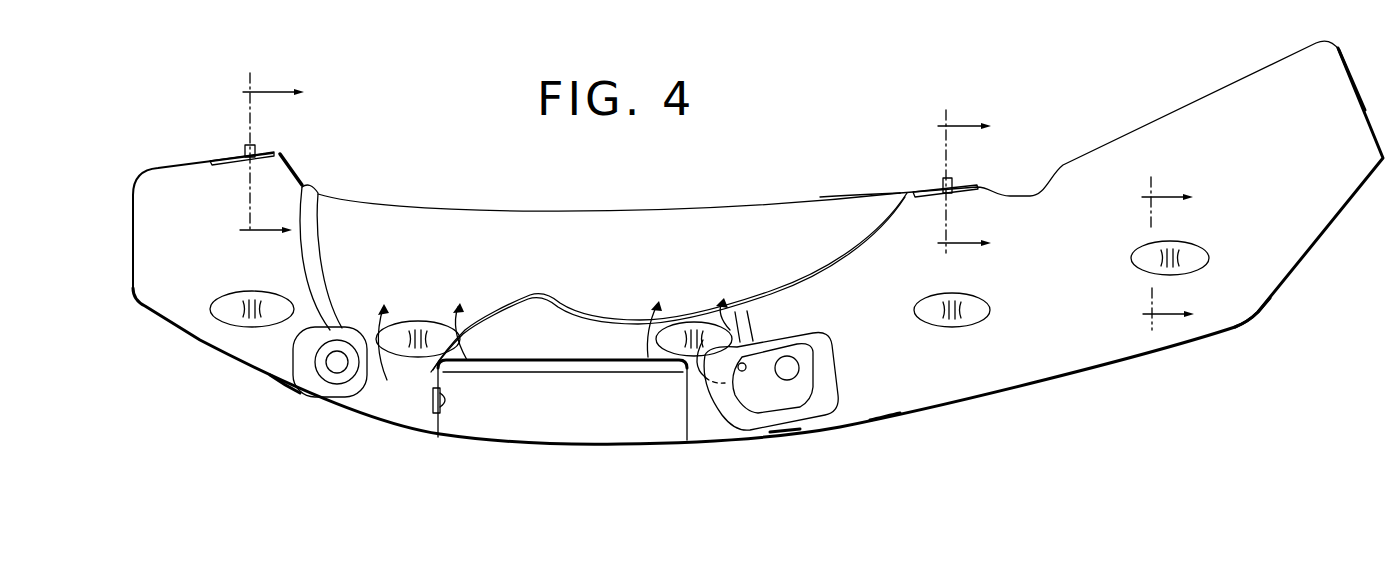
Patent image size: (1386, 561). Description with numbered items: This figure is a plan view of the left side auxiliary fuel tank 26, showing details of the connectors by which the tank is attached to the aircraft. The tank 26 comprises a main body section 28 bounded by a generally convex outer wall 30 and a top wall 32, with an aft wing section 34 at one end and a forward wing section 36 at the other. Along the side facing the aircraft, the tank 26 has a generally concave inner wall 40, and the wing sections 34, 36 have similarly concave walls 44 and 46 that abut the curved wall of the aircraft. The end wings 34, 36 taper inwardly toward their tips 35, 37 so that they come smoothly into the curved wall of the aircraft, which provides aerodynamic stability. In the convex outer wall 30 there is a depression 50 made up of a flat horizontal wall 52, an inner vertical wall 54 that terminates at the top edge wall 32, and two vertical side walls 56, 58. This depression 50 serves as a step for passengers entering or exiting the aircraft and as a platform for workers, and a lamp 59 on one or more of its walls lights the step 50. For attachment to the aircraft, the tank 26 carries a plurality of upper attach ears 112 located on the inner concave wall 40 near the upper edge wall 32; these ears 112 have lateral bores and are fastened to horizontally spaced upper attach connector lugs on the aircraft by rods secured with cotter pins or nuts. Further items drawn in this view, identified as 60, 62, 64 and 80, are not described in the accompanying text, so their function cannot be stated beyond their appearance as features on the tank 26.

The left side auxiliary fuel tank 26 is at (1089, 392).
The main body section 28 is at (921, 374).
The convex outer wall 30 is at (792, 433).
The top wall 32 is at (895, 402).
The aft wing section 34 is at (1245, 327).
The tip 35 is at (1365, 97).
The forward wing section 36 is at (285, 388).
The tip 37 is at (133, 243).
The concave inner wall 40 is at (865, 195).
The wall of wing section 44 is at (1163, 115).
The wall of wing section 46 is at (296, 168).
The depression 50 is at (563, 414).
The flat horizontal wall 52 is at (647, 430).
The inner vertical wall 54 is at (552, 368).
The vertical side wall 56 is at (687, 403).
The vertical side wall 58 is at (442, 412).
The lamp 59 is at (448, 397).
The curved rib 60 is at (818, 277).
The mounting bracket 62 is at (800, 350).
The boss 64 is at (337, 355).
The locating tab 80 is at (252, 146).
The upper attach ear 112 is at (963, 310).